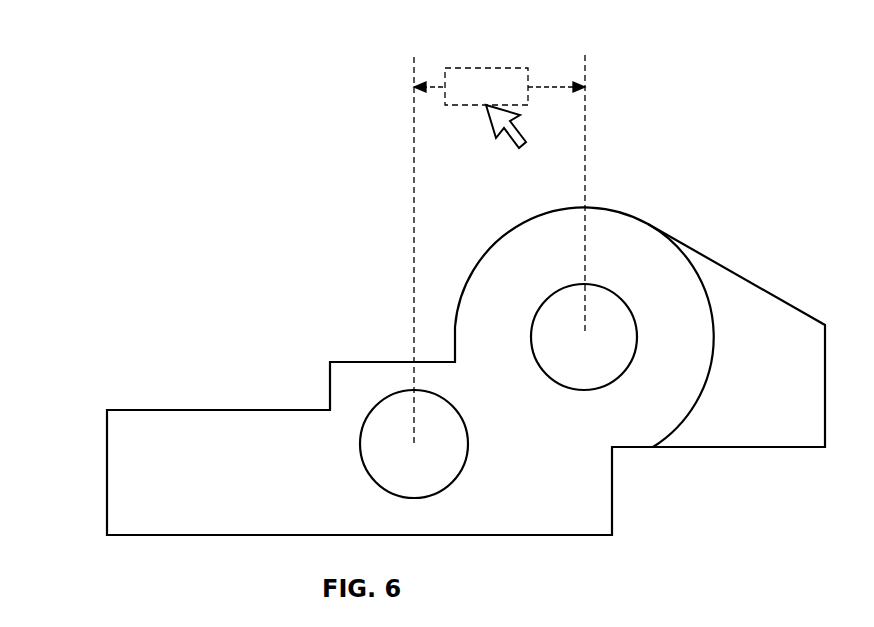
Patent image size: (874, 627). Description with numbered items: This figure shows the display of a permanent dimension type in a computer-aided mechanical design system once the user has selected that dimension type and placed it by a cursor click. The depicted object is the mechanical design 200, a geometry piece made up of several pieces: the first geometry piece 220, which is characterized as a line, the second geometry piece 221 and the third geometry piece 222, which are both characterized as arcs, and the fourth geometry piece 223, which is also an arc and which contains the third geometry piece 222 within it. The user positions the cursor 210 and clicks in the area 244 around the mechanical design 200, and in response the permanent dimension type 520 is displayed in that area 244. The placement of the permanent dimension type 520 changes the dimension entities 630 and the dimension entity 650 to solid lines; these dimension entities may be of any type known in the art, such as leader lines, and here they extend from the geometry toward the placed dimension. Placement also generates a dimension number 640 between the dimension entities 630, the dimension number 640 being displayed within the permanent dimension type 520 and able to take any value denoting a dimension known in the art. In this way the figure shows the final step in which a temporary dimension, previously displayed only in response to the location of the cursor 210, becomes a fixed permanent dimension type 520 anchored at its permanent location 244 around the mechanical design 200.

The mechanical design 200 is at (421, 296).
The cursor 210 is at (505, 128).
The first geometry piece 220 is at (107, 472).
The second geometry piece 221 is at (468, 445).
The third geometry piece 222 is at (595, 283).
The fourth geometry piece 223 is at (714, 343).
The area 244 is at (553, 159).
The permanent dimension type 520 is at (502, 68).
The dimension entities 630 is at (412, 200).
The dimension number 640 is at (495, 70).
The dimension entity 650 is at (443, 88).